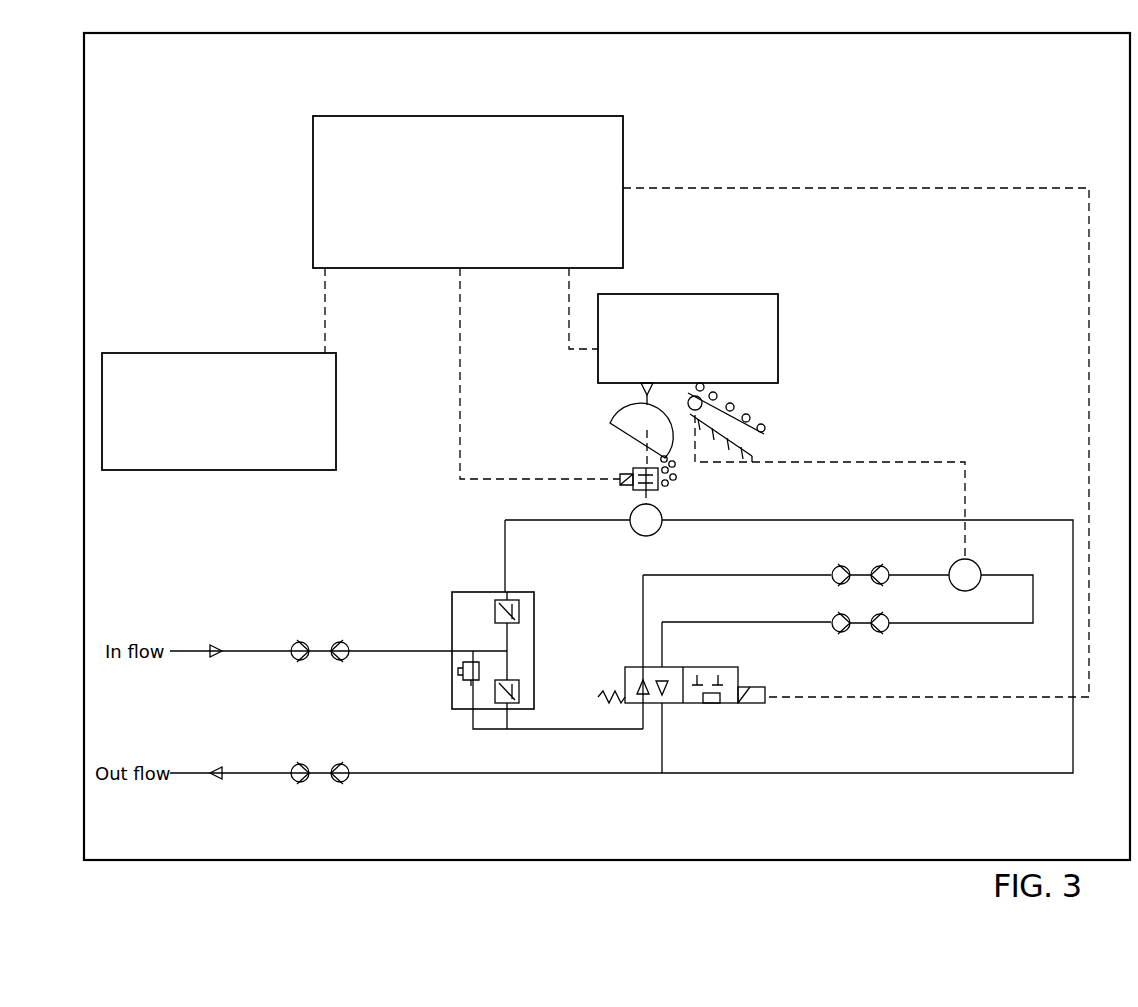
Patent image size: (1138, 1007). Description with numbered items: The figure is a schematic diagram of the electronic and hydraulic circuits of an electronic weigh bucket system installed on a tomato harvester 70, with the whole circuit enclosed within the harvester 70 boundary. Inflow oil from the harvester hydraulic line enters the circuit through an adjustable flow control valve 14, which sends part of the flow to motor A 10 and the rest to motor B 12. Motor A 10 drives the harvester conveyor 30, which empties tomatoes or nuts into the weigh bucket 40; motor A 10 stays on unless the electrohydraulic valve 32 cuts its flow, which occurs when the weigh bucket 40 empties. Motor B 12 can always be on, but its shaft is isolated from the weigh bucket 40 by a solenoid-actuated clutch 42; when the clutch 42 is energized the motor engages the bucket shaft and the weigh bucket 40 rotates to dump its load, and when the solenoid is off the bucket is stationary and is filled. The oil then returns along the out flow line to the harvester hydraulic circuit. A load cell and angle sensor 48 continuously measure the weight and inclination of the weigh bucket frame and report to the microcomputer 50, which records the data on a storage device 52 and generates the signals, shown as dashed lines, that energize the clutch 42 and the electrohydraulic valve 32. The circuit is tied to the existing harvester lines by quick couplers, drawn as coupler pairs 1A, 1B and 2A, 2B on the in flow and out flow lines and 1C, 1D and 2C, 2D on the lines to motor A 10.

The tomato harvester 70 is at (607, 446).
The microcomputer 50 is at (468, 192).
The storage device 52 is at (219, 411).
The load cell and angle sensor 48 is at (688, 338).
The weigh bucket 40 is at (627, 434).
The solenoid-actuated clutch 42 is at (660, 490).
The harvester conveyor 30 is at (760, 445).
The motor B 12 is at (646, 536).
The adjustable flow control valve 14 is at (450, 612).
The electrohydraulic valve 32 is at (700, 712).
The motor A 10 is at (977, 564).
The check valve 1A is at (300, 637).
The check valve 1B is at (338, 637).
The check valve 2A is at (300, 788).
The check valve 2B is at (338, 788).
The check valve 1C is at (842, 562).
The check valve 1D is at (878, 562).
The check valve 2C is at (842, 639).
The check valve 2D is at (878, 639).